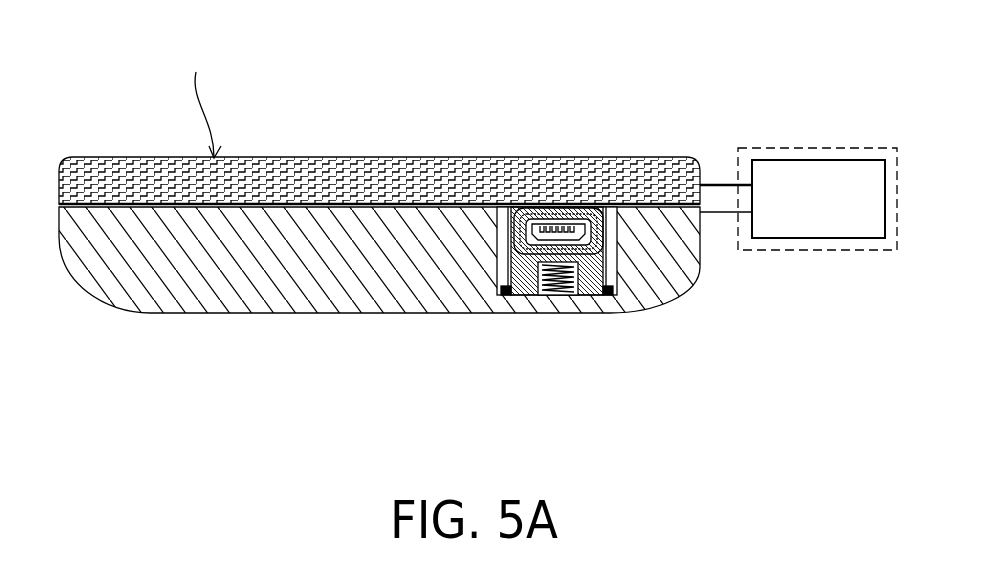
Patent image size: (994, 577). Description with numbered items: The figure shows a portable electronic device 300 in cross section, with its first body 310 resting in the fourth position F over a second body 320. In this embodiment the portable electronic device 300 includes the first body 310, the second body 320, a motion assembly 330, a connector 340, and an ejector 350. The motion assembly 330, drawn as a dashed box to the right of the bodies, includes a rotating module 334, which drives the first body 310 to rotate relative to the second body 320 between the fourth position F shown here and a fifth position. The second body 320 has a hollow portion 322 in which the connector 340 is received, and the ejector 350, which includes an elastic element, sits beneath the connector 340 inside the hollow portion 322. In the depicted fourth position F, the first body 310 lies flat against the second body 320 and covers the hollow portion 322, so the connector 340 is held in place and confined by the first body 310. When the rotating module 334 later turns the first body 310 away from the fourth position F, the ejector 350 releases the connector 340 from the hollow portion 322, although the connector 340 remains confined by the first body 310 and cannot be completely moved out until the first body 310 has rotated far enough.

The portable electronic device 300 is at (847, 449).
The first body 310 is at (313, 171).
The second body 320 is at (328, 296).
The hollow portion 322 is at (499, 248).
The motion assembly 330 is at (782, 250).
The rotating module 334 is at (811, 160).
The connector 340 is at (603, 231).
The ejector 350 is at (550, 294).
The fourth position F is at (206, 99).